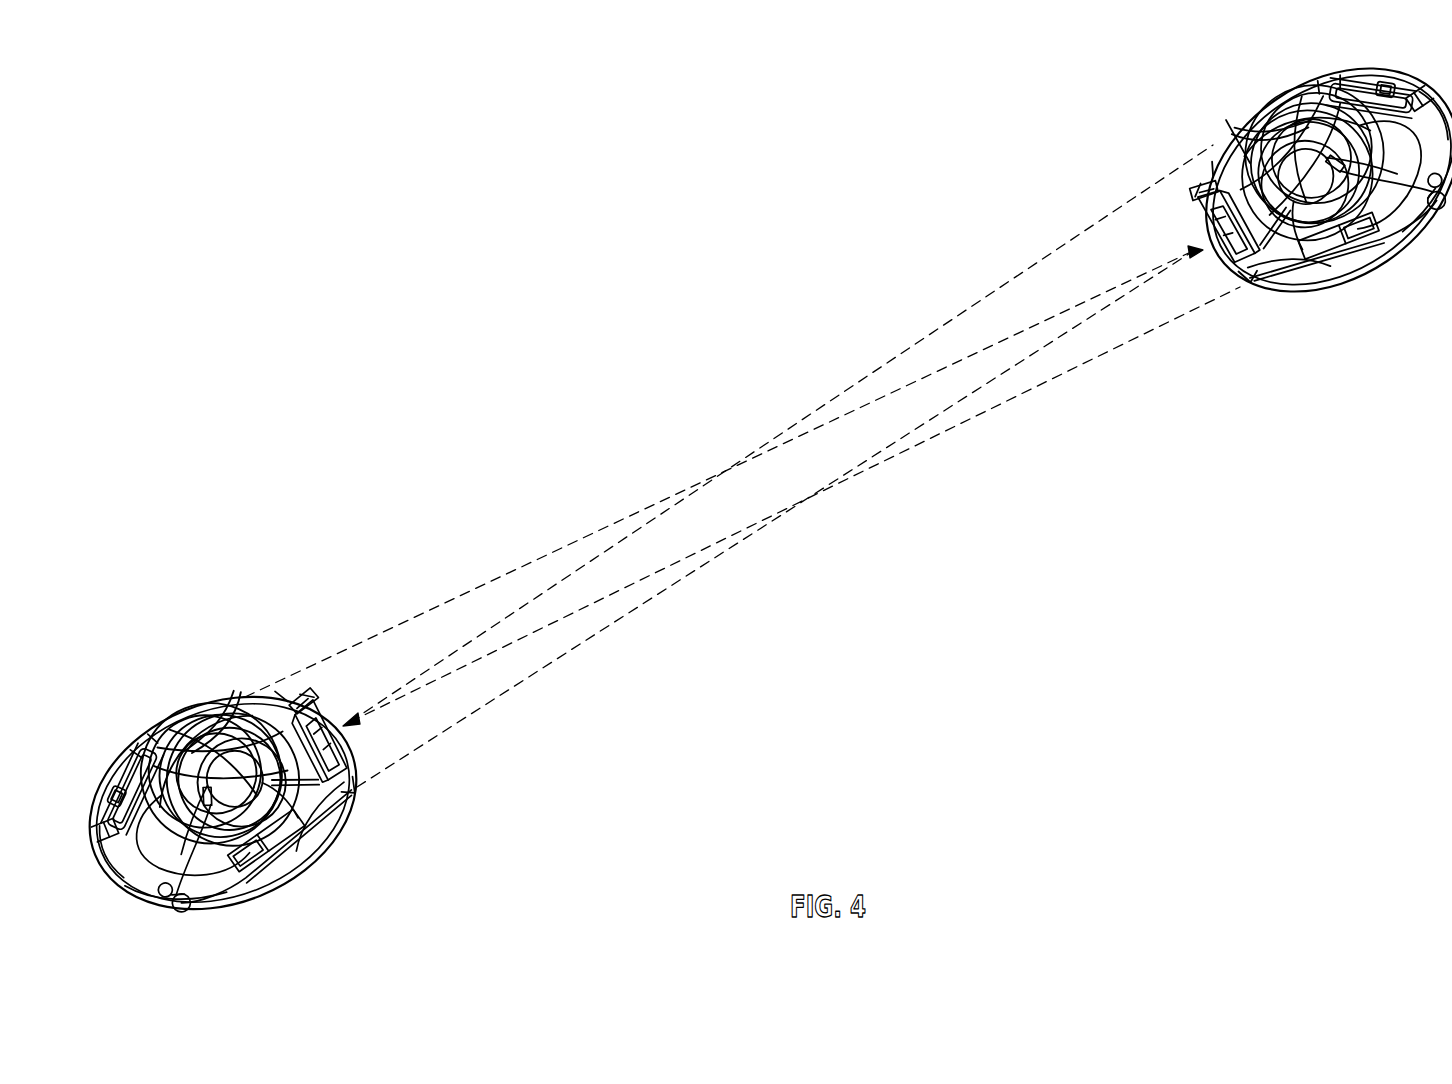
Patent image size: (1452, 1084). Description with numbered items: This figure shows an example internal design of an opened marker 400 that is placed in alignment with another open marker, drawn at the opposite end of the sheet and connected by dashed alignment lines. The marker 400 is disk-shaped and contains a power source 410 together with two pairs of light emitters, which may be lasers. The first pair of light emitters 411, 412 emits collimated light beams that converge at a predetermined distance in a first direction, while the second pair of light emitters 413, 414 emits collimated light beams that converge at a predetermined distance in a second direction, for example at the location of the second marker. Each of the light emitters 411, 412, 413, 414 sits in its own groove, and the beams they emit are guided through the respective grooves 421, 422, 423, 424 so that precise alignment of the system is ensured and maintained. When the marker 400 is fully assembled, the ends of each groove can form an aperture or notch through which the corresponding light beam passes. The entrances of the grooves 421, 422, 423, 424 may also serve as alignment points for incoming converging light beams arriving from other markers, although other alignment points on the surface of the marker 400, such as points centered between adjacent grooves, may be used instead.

The marker 400 is at (160, 584).
The power source 410 is at (210, 800).
The light emitter 411 is at (120, 785).
The light emitter 412 is at (335, 733).
The light emitter 413 is at (182, 718).
The light emitter 414 is at (282, 842).
The groove 421 is at (140, 752).
The groove 422 is at (317, 707).
The groove 423 is at (238, 703).
The groove 424 is at (335, 808).